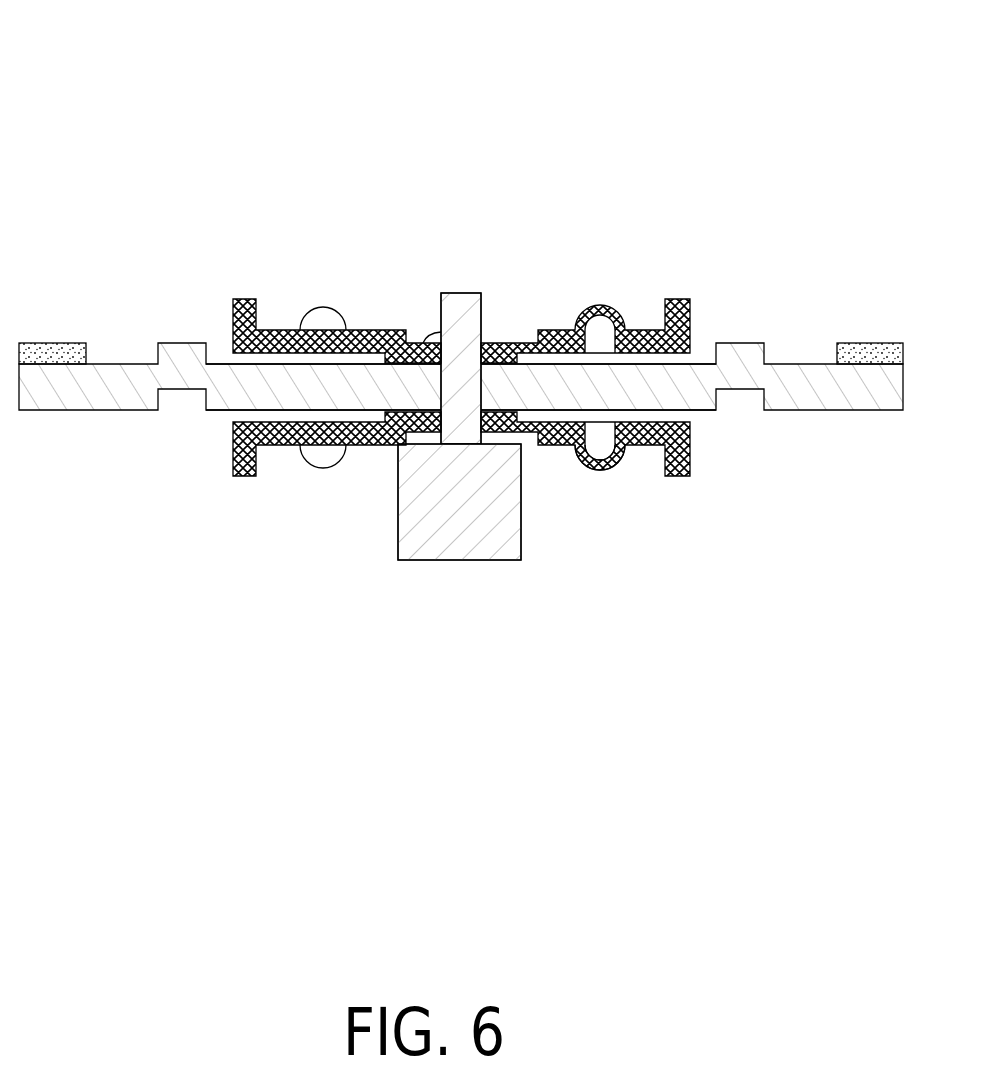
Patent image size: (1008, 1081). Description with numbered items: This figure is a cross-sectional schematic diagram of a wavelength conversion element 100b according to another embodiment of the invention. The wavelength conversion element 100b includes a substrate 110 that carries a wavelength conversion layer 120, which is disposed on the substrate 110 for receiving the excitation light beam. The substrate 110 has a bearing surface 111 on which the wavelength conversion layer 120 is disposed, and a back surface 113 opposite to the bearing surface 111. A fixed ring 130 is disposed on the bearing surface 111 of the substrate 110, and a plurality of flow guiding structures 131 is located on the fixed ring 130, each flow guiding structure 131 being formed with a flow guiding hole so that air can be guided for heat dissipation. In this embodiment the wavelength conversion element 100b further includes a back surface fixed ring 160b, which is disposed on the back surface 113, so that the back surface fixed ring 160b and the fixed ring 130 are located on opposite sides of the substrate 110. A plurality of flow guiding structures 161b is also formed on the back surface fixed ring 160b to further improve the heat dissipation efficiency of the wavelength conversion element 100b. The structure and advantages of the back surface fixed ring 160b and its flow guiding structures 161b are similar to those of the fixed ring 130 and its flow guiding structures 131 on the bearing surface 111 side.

The wavelength conversion element 100b is at (88, 58).
The substrate 110 is at (852, 397).
The bearing surface 111 is at (813, 362).
The back surface 113 is at (805, 412).
The wavelength conversion layer 120 is at (870, 352).
The fixed ring 130 is at (276, 337).
The flow guiding structure 131 is at (323, 316).
The back surface fixed ring 160b is at (276, 446).
The flow guiding structure 161b is at (600, 471).